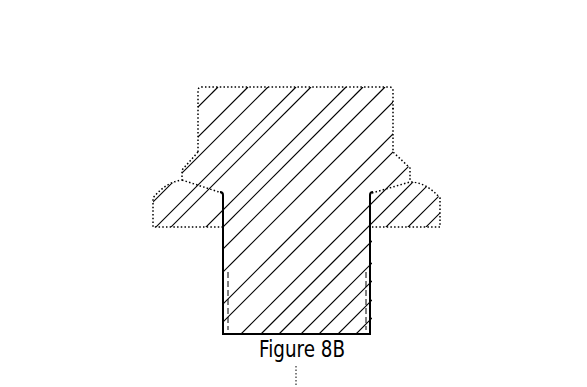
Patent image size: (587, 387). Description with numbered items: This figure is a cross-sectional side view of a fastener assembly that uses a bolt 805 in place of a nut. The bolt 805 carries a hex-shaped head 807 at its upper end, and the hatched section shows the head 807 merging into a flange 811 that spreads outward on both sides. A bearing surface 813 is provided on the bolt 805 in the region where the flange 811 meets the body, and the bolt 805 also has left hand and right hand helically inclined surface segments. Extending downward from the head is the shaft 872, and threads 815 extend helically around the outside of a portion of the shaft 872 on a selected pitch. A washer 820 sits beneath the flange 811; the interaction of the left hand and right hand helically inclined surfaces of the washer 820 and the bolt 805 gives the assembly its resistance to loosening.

The bolt 805 is at (378, 110).
The hex-shaped head 807 is at (393, 135).
The washer 820 is at (422, 195).
The flange 811 is at (182, 176).
The bearing surface 813 is at (203, 185).
The shaft 872 is at (345, 255).
The threads 815 is at (225, 307).